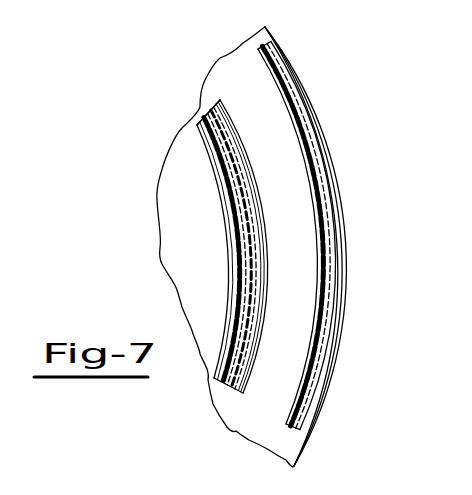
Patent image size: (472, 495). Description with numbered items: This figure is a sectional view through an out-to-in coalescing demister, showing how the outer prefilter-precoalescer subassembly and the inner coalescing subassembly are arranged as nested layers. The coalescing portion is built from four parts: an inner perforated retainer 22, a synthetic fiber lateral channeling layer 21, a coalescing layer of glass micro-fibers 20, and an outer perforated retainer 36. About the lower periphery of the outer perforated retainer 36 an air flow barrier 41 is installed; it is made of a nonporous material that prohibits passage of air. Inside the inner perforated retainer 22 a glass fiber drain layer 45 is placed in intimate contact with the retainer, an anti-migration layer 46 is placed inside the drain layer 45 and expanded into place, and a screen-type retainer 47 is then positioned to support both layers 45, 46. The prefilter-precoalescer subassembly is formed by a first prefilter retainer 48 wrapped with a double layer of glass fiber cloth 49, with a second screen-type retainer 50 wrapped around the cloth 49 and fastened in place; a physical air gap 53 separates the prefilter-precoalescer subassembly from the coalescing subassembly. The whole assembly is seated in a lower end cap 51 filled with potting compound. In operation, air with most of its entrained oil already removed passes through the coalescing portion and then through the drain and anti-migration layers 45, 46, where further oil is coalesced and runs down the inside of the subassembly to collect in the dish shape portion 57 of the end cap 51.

The coalescing layer of glass micro-fibers 20 is at (234, 391).
The synthetic fiber lateral channeling layer 21 is at (205, 116).
The inner perforated retainer 22 is at (209, 116).
The outer perforated retainer 36 is at (256, 218).
The air flow barrier 41 is at (256, 316).
The glass fiber drain layer 45 is at (149, 244).
The anti-migration layer 46 is at (203, 118).
The screen-type retainer 47 is at (200, 128).
The first prefilter retainer 48 is at (262, 58).
The glass fiber cloth 49 is at (267, 27).
The sidewall ply 50 is at (303, 130).
The lower end cap 51 is at (247, 437).
The physical air gap 53 is at (313, 275).
The dish shape portion 57 is at (178, 253).